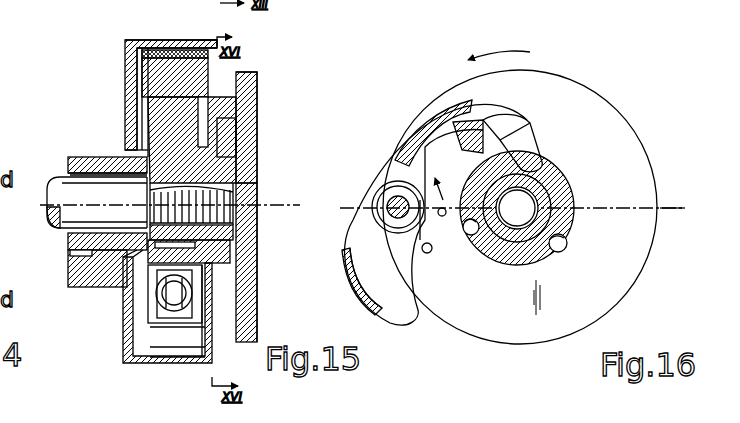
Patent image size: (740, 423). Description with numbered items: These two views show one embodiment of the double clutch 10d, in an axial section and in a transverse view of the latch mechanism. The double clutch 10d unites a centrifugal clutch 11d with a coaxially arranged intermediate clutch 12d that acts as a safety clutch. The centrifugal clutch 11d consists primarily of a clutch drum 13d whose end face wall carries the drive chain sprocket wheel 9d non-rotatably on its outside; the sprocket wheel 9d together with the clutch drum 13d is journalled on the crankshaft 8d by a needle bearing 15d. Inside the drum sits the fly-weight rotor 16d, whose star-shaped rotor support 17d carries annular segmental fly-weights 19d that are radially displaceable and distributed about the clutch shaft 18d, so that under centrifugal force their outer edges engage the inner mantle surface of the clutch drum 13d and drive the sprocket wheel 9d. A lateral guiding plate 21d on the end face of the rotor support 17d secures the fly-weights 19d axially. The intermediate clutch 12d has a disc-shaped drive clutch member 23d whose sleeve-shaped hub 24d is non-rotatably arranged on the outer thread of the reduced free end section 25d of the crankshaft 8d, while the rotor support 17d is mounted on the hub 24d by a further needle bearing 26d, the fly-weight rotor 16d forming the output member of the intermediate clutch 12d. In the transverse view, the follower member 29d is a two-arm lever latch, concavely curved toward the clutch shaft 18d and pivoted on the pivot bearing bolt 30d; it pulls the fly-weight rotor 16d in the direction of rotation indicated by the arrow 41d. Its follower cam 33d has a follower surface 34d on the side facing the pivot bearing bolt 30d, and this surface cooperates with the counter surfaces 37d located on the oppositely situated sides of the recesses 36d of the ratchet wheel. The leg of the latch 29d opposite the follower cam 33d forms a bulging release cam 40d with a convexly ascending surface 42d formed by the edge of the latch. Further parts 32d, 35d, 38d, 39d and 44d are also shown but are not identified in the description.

In FIG. 15, the crankshaft 8d is at (55, 185).
In FIG. 15, the drive chain sprocket wheel 9d is at (82, 287).
In FIG. 15, the double clutch 10d is at (188, 30).
In FIG. 15, the centrifugal clutch 11d is at (104, 28).
In FIG. 15, the intermediate clutch 12d is at (248, 38).
In FIG. 15, the clutch drum 13d is at (125, 42).
In FIG. 15, the needle bearing 15d is at (47, 193).
In FIG. 15, the fly-weight rotor 16d is at (150, 75).
In FIG. 15, the rotor support 17d is at (140, 112).
In FIG. 15, the clutch shaft 18d is at (50, 212).
In FIG. 15, the fly-weights 19d is at (140, 55).
In FIG. 15, the lateral guiding plate 21d is at (147, 130).
In FIG. 15, the drive clutch member 23d is at (258, 125).
In FIG. 16, the drive clutch member 23d is at (625, 140).
In FIG. 15, the hub 24d is at (257, 180).
In FIG. 16, the hub 24d is at (512, 273).
In FIG. 15, the free end section of the crankshaft 25d is at (257, 200).
In FIG. 15, the needle bearing 26d is at (222, 243).
In FIG. 15, the follower member 29d is at (258, 95).
In FIG. 16, the follower member 29d is at (410, 132).
In FIG. 16, the pivot bearing bolt 30d is at (392, 200).
In FIG. 16, the pawl 32d is at (443, 177).
In FIG. 15, the follower cam 33d is at (222, 145).
In FIG. 16, the follower cam 33d is at (533, 155).
In FIG. 16, the follower surface 34d is at (505, 152).
In FIG. 15, the hub ring 35d is at (233, 249).
In FIG. 16, the hub ring 35d is at (577, 192).
In FIG. 16, the recesses 36d is at (558, 250).
In FIG. 16, the counter surfaces 37d is at (556, 250).
In FIG. 16, the pawl lobe 38d is at (380, 233).
In FIG. 16, the stop pin 39d is at (443, 218).
In FIG. 16, the release cam 40d is at (347, 297).
In FIG. 16, the arrow 41d is at (499, 43).
In FIG. 16, the convexly ascending surface 42d is at (355, 292).
In FIG. 16, the axis line 44d is at (682, 212).